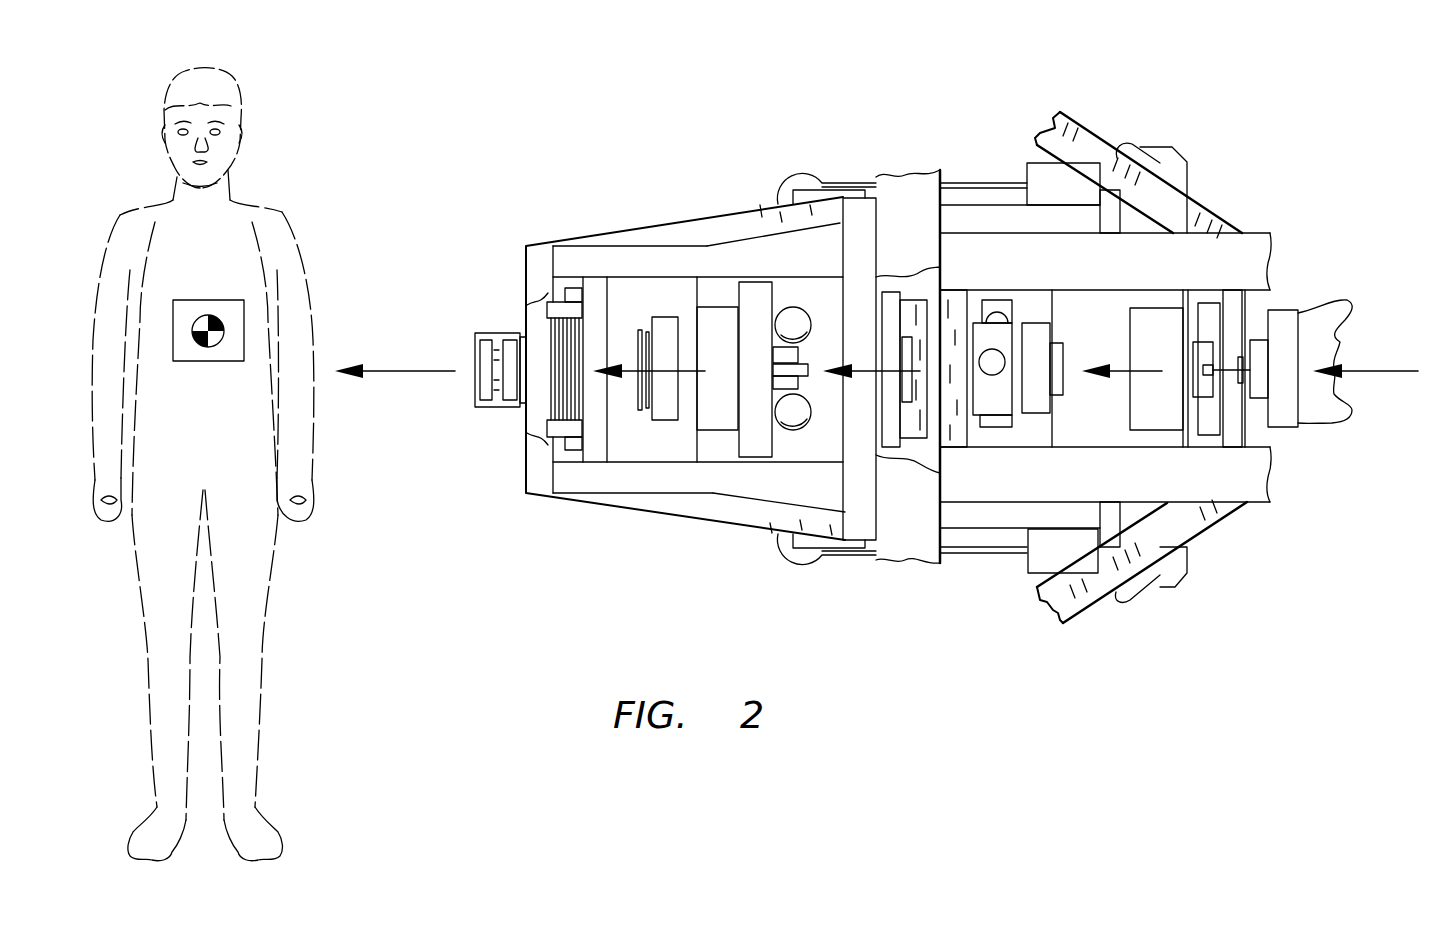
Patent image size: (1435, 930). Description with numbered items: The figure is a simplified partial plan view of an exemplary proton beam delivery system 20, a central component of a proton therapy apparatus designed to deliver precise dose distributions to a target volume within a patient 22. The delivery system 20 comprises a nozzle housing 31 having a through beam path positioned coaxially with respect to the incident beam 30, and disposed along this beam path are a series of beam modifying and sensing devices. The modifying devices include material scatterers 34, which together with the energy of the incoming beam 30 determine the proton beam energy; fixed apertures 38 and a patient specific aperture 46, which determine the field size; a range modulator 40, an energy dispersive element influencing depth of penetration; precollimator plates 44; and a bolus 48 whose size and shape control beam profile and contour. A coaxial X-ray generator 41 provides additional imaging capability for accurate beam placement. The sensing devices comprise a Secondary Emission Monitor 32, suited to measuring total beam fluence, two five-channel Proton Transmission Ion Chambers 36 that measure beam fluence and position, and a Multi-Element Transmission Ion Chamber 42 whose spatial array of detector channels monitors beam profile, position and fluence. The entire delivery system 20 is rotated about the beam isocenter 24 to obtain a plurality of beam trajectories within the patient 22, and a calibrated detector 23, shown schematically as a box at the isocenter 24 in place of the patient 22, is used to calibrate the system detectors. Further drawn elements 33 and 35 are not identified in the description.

The beam delivery system 20 is at (702, 133).
The patient 22 is at (205, 63).
The calibrated detector 23 is at (244, 300).
The beam isocenter 24 is at (208, 315).
The incident beam 30 is at (1348, 368).
The nozzle housing 31 is at (1243, 233).
The Secondary Emission Monitor (SEM) 32 is at (1210, 342).
The plunger 33 is at (1333, 315).
The material scatterers 34 is at (988, 335).
The shaft 35 is at (1232, 390).
The ionization chambers (Proton Transmission Ion Chambers) 36 is at (917, 400).
The fixed apertures 38 is at (667, 317).
The range modulator 40 is at (712, 415).
The coaxial X-ray generator 41 is at (793, 430).
The ionization chamber (Multi-Element Transmission Ion Chamber) 42 is at (638, 357).
The precollimator plates 44 is at (552, 417).
The patient specific aperture 46 is at (510, 342).
The bolus 48 is at (477, 407).